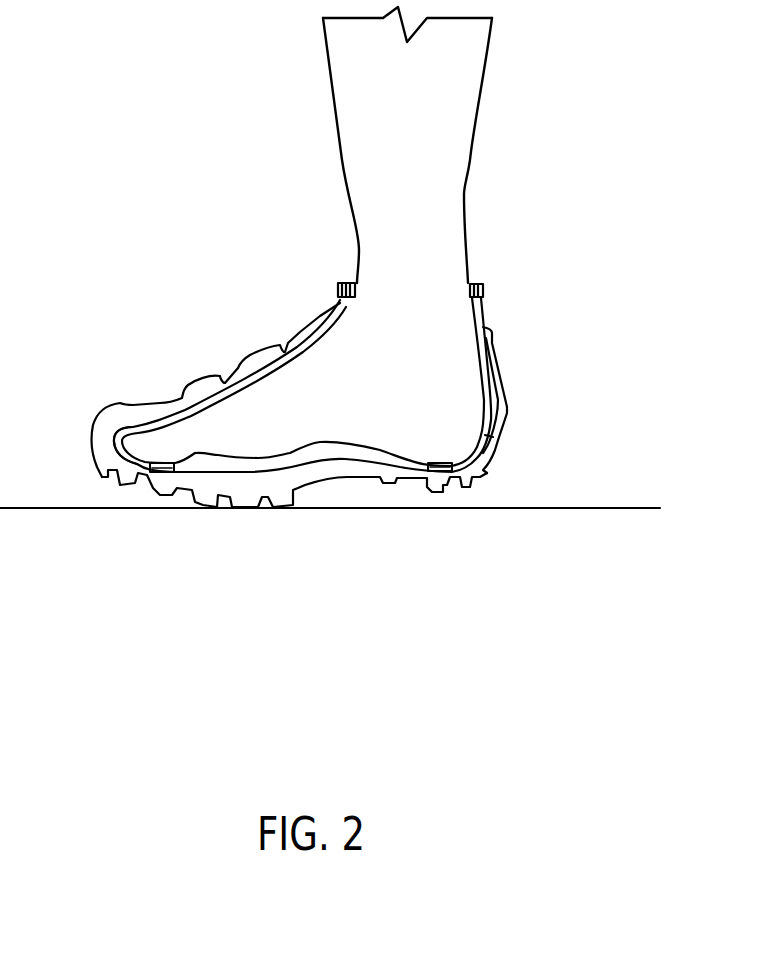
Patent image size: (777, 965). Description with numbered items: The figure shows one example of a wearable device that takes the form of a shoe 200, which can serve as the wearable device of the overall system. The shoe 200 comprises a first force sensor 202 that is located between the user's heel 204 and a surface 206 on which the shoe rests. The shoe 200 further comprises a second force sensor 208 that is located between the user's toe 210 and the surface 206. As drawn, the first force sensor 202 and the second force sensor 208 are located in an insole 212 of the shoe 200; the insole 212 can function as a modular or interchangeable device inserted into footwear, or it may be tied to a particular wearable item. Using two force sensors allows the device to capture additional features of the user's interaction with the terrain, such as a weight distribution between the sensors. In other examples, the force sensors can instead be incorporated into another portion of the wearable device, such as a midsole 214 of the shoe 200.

The shoe 200 is at (266, 284).
The first force sensor 202 is at (440, 472).
The user's heel 204 is at (477, 463).
The surface 206 is at (545, 512).
The second force sensor 208 is at (167, 472).
The user's toe 210 is at (124, 414).
The insole 212 is at (118, 443).
The midsole 214 is at (311, 490).